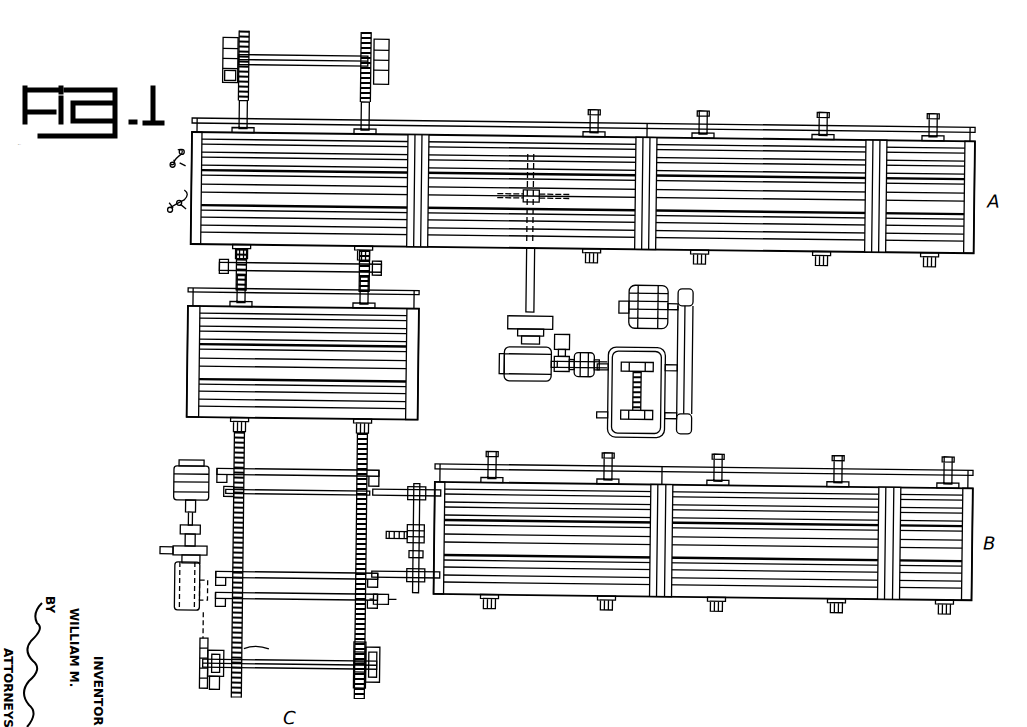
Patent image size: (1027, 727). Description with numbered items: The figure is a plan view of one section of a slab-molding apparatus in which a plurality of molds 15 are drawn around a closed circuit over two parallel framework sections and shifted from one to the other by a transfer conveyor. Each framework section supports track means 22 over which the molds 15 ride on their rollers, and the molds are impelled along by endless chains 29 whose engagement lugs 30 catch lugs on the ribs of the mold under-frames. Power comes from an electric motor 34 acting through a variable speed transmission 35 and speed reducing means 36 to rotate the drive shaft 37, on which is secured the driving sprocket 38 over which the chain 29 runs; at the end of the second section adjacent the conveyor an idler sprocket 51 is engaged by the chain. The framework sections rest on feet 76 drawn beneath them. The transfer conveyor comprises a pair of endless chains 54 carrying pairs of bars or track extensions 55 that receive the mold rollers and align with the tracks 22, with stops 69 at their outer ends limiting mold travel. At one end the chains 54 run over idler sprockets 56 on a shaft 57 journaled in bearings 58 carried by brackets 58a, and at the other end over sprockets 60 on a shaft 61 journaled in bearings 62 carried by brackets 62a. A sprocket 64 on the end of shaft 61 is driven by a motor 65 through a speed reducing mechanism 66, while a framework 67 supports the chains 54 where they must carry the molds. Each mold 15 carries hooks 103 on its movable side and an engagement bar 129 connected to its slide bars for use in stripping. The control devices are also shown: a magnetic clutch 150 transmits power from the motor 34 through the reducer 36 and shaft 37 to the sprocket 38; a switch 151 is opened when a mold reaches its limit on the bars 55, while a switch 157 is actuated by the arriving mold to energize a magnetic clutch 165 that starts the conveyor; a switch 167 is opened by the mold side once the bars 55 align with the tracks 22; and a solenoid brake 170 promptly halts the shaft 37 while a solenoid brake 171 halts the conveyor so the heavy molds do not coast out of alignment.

The mold 15 is at (196, 222).
The track means 22 is at (393, 487).
The endless chain 29 is at (414, 550).
The engagement lug 30 is at (392, 530).
The electric motor 34 is at (663, 284).
The variable speed transmission 35 is at (612, 397).
The speed reducing means 36 is at (512, 360).
The drive shaft 37 is at (536, 290).
The driving sprocket 38 is at (572, 193).
The idler sprocket 51 is at (414, 523).
The endless chain 54 is at (358, 615).
The bar or track extension 55 is at (272, 574).
The idler sprocket 56 is at (362, 83).
The shaft 57 is at (302, 54).
The bearing 58 is at (226, 59).
The bracket 58a is at (224, 80).
The sprocket 60 is at (360, 647).
The shaft 61 is at (293, 668).
The bearing 62 is at (386, 660).
The bracket 62a is at (221, 684).
The sprocket 64 is at (206, 650).
The motor 65 is at (178, 490).
The speed reducing mechanism 66 is at (180, 603).
The framework 67 is at (324, 266).
The stop 69 is at (232, 495).
The foot 76 is at (464, 258).
The hook 103 is at (690, 110).
The engagement bar 129 is at (730, 115).
The magnetic clutch 150 is at (582, 375).
The switch 151 is at (180, 200).
The switch 157 is at (178, 155).
The magnetic clutch 165 is at (185, 529).
The switch 167 is at (397, 598).
The solenoid brake 170 is at (562, 370).
The solenoid brake 171 is at (178, 551).